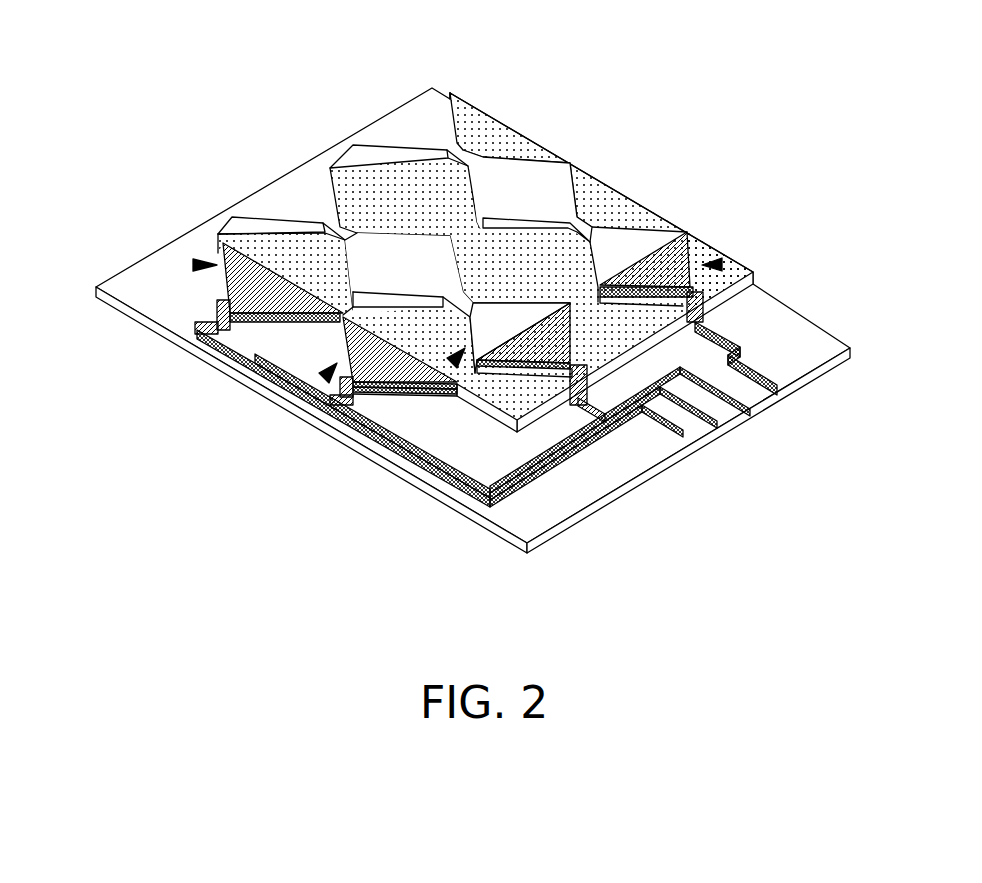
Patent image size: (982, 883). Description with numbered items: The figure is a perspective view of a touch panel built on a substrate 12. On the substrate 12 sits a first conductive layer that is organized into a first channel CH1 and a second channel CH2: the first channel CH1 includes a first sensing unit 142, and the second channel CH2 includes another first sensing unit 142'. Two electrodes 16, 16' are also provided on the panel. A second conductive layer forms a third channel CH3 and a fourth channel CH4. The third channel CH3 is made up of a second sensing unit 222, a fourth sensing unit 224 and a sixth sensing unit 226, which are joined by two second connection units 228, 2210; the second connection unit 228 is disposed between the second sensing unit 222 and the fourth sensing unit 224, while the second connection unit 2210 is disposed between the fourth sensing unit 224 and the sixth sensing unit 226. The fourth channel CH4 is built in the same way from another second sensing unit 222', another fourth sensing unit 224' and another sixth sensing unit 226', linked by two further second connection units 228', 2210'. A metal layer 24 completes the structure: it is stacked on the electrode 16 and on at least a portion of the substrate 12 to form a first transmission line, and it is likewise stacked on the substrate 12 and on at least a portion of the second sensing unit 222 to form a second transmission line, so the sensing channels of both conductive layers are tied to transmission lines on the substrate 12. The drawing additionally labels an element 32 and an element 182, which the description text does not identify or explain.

The substrate 12 is at (178, 248).
The electrode 16 is at (375, 458).
The electrode 16' is at (296, 419).
The metal layer 24 is at (681, 236).
The connecting trace 32 is at (724, 333).
The first sensing unit 142 is at (546, 450).
The first sensing unit 142' is at (321, 418).
The outlet channel 182 is at (537, 318).
The second sensing unit 222 is at (548, 262).
The second sensing unit 222' is at (688, 236).
The fourth sensing unit 224 is at (416, 198).
The fourth sensing unit 224' is at (565, 188).
The sixth sensing unit 226 is at (254, 225).
The sixth sensing unit 226' is at (368, 115).
The second connection unit 228 is at (568, 130).
The second connection unit 228' is at (660, 220).
The second connection unit 2210 is at (401, 246).
The second connection unit 2210' is at (457, 138).
The first channel CH1 is at (322, 381).
The second channel CH2 is at (193, 265).
The third channel CH3 is at (452, 364).
The fourth channel CH4 is at (722, 263).